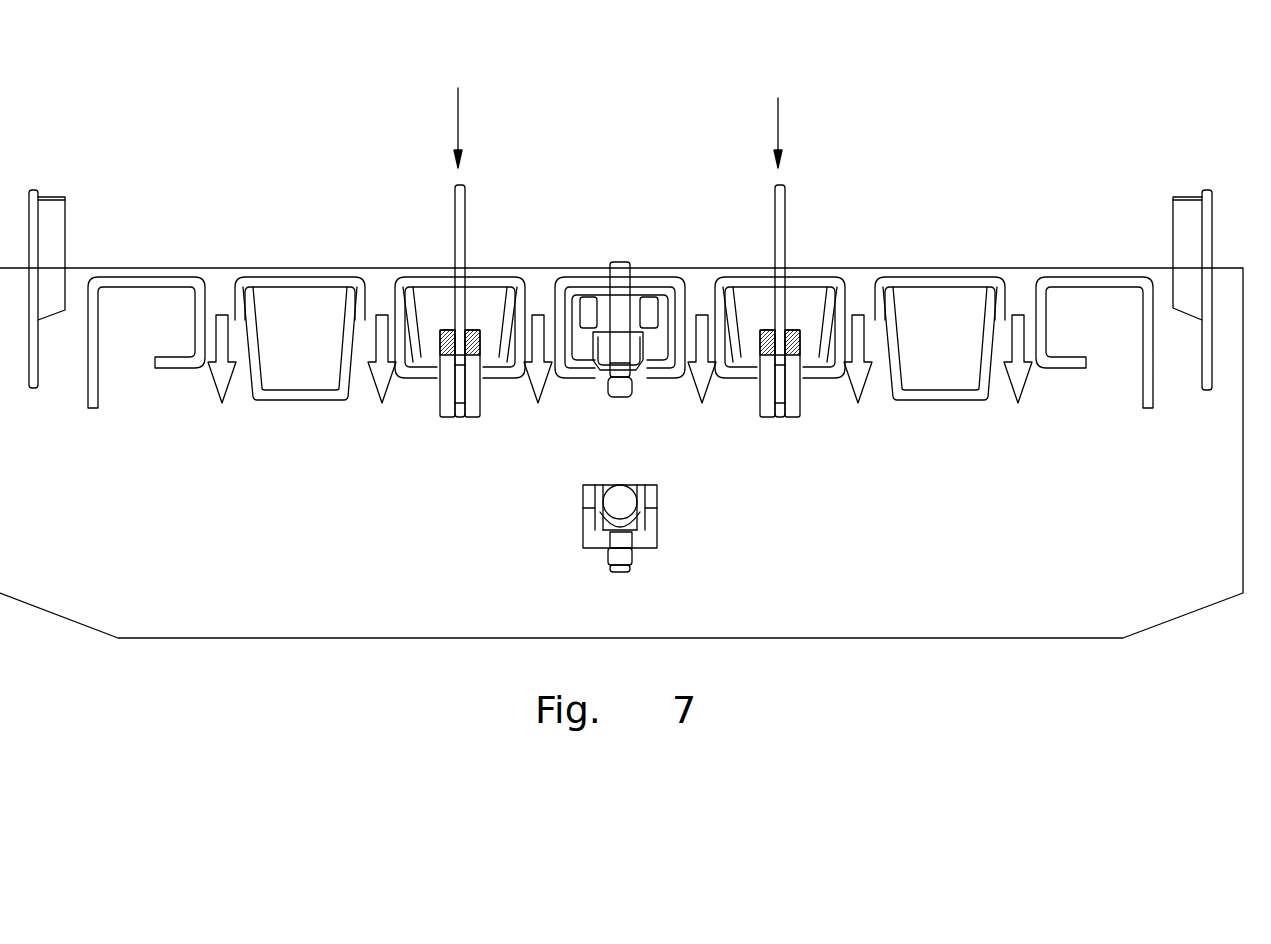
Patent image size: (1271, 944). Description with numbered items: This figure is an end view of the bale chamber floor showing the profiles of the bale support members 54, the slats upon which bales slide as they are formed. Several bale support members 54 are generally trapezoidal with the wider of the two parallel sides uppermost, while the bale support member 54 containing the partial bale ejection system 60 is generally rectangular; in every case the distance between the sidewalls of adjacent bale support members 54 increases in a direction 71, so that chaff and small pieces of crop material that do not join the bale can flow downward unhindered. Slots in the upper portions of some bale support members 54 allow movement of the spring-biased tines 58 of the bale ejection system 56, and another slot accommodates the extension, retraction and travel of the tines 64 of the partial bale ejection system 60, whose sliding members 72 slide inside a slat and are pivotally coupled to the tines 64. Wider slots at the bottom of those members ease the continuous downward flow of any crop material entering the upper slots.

The bale support member 54 is at (417, 277).
The bale ejection system 56 is at (618, 116).
The tine 58 is at (455, 227).
The partial bale ejection system 60 is at (642, 290).
The tine 64 is at (632, 305).
The direction 71 is at (215, 388).
The sliding member 72 is at (660, 367).